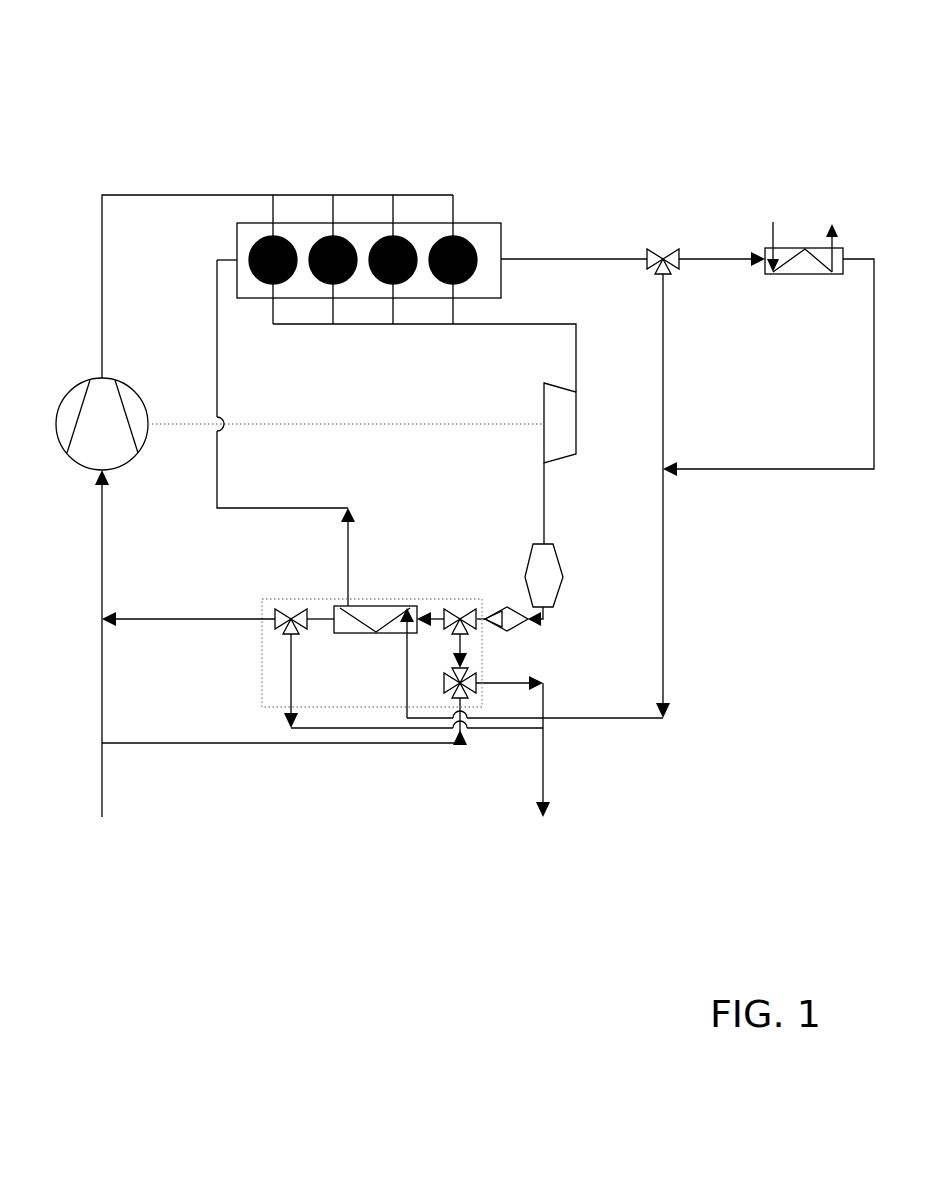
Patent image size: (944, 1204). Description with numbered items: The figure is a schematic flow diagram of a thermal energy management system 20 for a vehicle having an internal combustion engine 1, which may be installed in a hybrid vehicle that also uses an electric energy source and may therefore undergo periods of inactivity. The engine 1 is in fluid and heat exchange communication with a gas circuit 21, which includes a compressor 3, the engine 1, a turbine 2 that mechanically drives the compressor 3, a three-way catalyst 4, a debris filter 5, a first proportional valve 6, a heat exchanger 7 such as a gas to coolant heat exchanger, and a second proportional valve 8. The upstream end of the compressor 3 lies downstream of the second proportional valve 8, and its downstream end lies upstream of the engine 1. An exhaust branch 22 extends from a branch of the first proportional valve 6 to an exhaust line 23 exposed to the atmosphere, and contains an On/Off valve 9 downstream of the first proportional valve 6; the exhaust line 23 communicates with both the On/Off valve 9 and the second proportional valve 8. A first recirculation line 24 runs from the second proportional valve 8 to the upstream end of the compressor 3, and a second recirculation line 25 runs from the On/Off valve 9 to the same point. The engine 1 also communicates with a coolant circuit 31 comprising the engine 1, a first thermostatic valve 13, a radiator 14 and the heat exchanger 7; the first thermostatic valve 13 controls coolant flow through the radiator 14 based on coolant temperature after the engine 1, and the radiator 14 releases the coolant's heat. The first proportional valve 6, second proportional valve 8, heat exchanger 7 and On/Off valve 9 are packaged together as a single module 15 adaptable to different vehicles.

The thermal energy management system 20 is at (505, 78).
The internal combustion engine 1 is at (501, 236).
The gas circuit 21 is at (256, 185).
The compressor 3 is at (64, 396).
The turbine 2 is at (544, 418).
The coolant circuit 31 is at (595, 248).
The first thermostatic valve 13 is at (664, 258).
The radiator 14 is at (773, 273).
The 3-way catalyst 4 is at (563, 590).
The debris filter 5 is at (510, 607).
The first proportional valve 6 is at (460, 615).
The heat exchanger 7 is at (347, 633).
The second proportional valve 8 is at (291, 612).
The On/Off valve 9 is at (455, 684).
The exhaust branch 22 is at (465, 655).
The module 15 is at (440, 599).
The first recirculation line 24 is at (197, 619).
The second recirculation line 25 is at (260, 743).
The exhaust line 23 is at (545, 790).